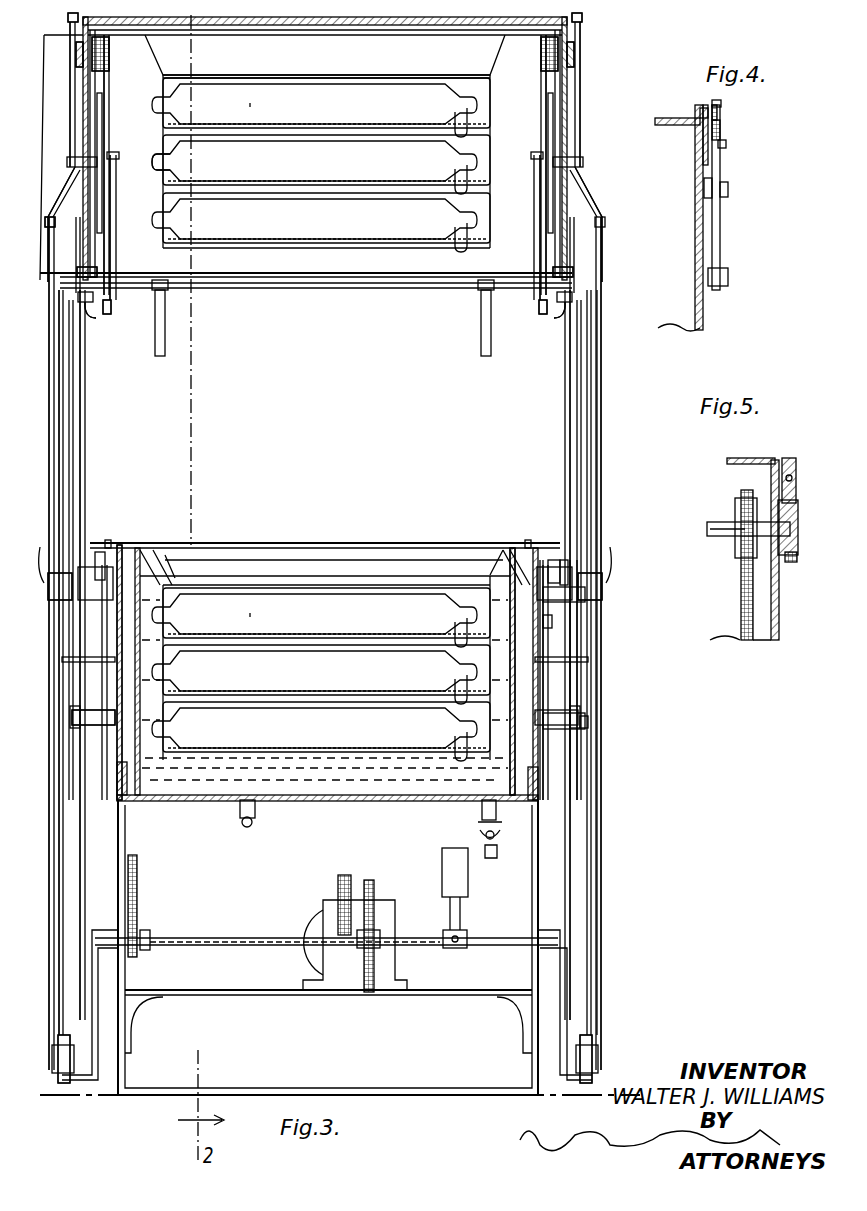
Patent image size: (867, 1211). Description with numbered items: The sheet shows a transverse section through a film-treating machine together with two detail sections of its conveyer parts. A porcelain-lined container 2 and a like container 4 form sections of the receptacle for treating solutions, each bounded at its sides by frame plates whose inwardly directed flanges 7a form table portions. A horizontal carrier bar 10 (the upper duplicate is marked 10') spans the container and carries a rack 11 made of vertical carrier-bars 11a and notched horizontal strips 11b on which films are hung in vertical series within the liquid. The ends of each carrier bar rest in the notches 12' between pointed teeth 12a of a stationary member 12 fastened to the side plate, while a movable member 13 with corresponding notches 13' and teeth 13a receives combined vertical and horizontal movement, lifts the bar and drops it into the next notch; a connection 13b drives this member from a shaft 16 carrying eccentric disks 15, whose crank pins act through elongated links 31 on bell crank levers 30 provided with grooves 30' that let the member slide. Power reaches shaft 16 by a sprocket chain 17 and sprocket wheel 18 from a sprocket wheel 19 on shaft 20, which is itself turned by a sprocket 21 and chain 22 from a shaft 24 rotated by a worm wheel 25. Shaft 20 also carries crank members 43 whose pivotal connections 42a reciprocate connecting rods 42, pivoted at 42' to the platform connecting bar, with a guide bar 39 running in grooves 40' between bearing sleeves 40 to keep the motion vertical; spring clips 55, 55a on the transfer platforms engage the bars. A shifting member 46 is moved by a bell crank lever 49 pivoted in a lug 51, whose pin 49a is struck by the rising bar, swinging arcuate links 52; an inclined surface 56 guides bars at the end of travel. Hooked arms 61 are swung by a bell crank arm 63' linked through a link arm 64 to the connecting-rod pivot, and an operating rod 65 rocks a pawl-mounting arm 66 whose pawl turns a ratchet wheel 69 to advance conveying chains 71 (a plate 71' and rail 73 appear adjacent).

In FIG. 3, the container 2 is at (196, 15).
In FIG. 3, the container 4 is at (334, 567).
In FIG. 4, the inwardly directed flange 7a is at (672, 128).
In FIG. 5, the inwardly directed flange 7a is at (730, 467).
In FIG. 3, the carrier bar 10 is at (325, 526).
In FIG. 3, the upper tank 10' is at (325, 55).
In FIG. 3, the frame or rack 11 is at (478, 190).
In FIG. 3, the vertically-disposed carrier-bar 11a is at (168, 182).
In FIG. 3, the horizontal strip 11b is at (298, 720).
In FIG. 3, the stationary member 12 is at (316, 658).
In FIG. 4, the stationary member 12 is at (676, 217).
In FIG. 3, the inter-notch tooth 12a is at (122, 545).
In FIG. 4, the inter-notch tooth 12a is at (706, 108).
In FIG. 4, the notch 12' is at (679, 109).
In FIG. 3, the movable member 13 is at (319, 545).
In FIG. 4, the movable member 13 is at (756, 127).
In FIG. 5, the movable member 13 is at (766, 533).
In FIG. 3, the tooth 13a is at (112, 540).
In FIG. 4, the tooth 13a is at (720, 107).
In FIG. 5, the connection 13b is at (800, 475).
In FIG. 4, the notch 13' is at (742, 109).
In FIG. 5, the disk 15 is at (798, 517).
In FIG. 5, the shaft 16 is at (706, 534).
In FIG. 3, the sprocket chain 17 is at (138, 884).
In FIG. 5, the sprocket chain 17 is at (740, 587).
In FIG. 5, the sprocket wheel 18 is at (735, 554).
In FIG. 3, the sprocket wheel 19 is at (150, 932).
In FIG. 3, the shaft 20 is at (256, 917).
In FIG. 3, the sprocket 21 is at (378, 893).
In FIG. 3, the chain 22 is at (372, 882).
In FIG. 3, the shaft 24 is at (323, 917).
In FIG. 3, the worm wheel 25 is at (344, 876).
In FIG. 3, the bell crank lever 30 is at (610, 680).
In FIG. 4, the bell crank lever 30 is at (737, 197).
In FIG. 4, the groove 30' is at (747, 155).
In FIG. 3, the elongated link 31 is at (552, 625).
In FIG. 4, the elongated link 31 is at (728, 282).
In FIG. 3, the guide bar 39 is at (87, 857).
In FIG. 3, the bearing sleeve 40 is at (354, 673).
In FIG. 3, the groove 40' is at (616, 715).
In FIG. 3, the connecting rod 42 is at (336, 662).
In FIG. 3, the pivot 42' is at (355, 535).
In FIG. 3, the pivotal connection 42a is at (604, 1072).
In FIG. 3, the crank member 43 is at (95, 987).
In FIG. 3, the shifting member 46 is at (167, 315).
In FIG. 3, the bell crank lever 49 is at (78, 296).
In FIG. 3, the pin 49a is at (566, 318).
In FIG. 3, the lug 51 is at (90, 278).
In FIG. 3, the arcuate link 52 is at (70, 262).
In FIG. 3, the spring clip 55 is at (140, 553).
In FIG. 3, the brace 55a is at (560, 565).
In FIG. 3, the inclined surface 56 is at (111, 314).
In FIG. 3, the hooked arm 61 is at (117, 212).
In FIG. 3, the arm 63' is at (333, 224).
In FIG. 3, the link arm 64 is at (56, 348).
In FIG. 3, the operating rod 65 is at (70, 124).
In FIG. 3, the pawl-mounting arm 66 is at (70, 38).
In FIG. 3, the ratchet wheel 69 is at (78, 65).
In FIG. 3, the conveying chain 71 is at (325, 61).
In FIG. 4, the plate 71' is at (706, 317).
In FIG. 3, the rail 73 is at (109, 120).